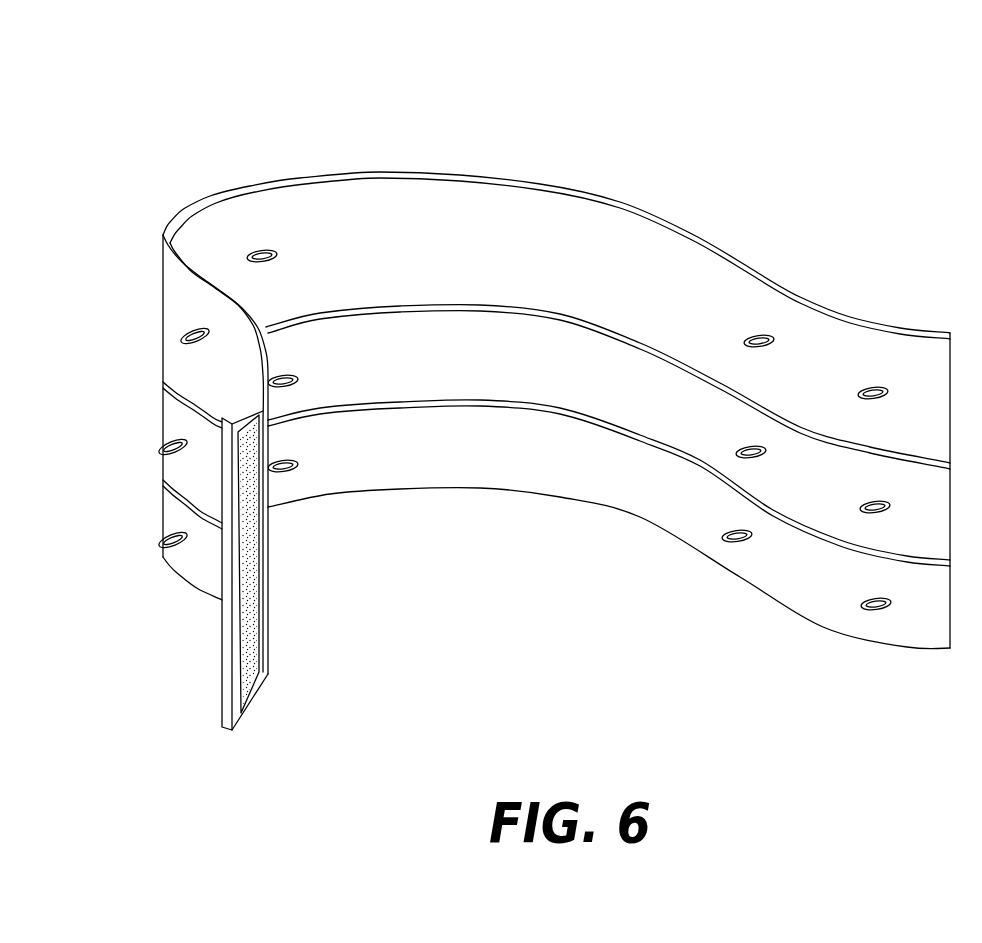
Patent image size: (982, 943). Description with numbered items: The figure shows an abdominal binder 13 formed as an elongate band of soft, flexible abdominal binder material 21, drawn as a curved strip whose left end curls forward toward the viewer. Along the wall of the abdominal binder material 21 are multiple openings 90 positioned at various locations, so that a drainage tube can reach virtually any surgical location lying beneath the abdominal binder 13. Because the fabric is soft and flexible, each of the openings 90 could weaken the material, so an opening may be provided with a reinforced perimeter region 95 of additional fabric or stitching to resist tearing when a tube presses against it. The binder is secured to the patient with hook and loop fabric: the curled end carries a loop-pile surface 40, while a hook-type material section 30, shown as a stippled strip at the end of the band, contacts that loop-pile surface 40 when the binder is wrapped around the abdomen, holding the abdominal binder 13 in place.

The abdominal binder 13 is at (775, 197).
The abdominal binder material 21 is at (465, 208).
The hook-type material section 30 is at (258, 555).
The loop-pile surface 40 is at (184, 463).
The openings 90 is at (767, 452).
The reinforced perimeter region 95 is at (727, 532).